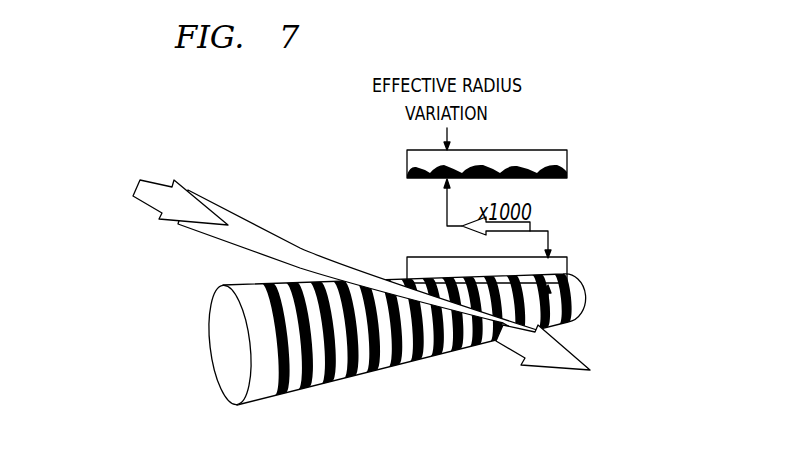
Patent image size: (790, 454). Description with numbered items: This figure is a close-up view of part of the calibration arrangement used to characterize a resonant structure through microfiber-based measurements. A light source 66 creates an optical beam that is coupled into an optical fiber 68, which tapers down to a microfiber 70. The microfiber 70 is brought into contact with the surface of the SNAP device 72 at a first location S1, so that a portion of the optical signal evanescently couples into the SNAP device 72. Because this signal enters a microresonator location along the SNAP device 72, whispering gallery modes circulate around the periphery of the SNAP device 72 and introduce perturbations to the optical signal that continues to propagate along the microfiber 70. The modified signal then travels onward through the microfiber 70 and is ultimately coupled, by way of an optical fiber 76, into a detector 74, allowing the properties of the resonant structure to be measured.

The light source 66 is at (136, 188).
The optical fiber 68 is at (360, 253).
The microfiber 70 is at (304, 263).
The SNAP device 72 is at (228, 344).
The detector 74 is at (554, 356).
The optical fiber 76 is at (504, 338).
The first location S1 is at (384, 276).